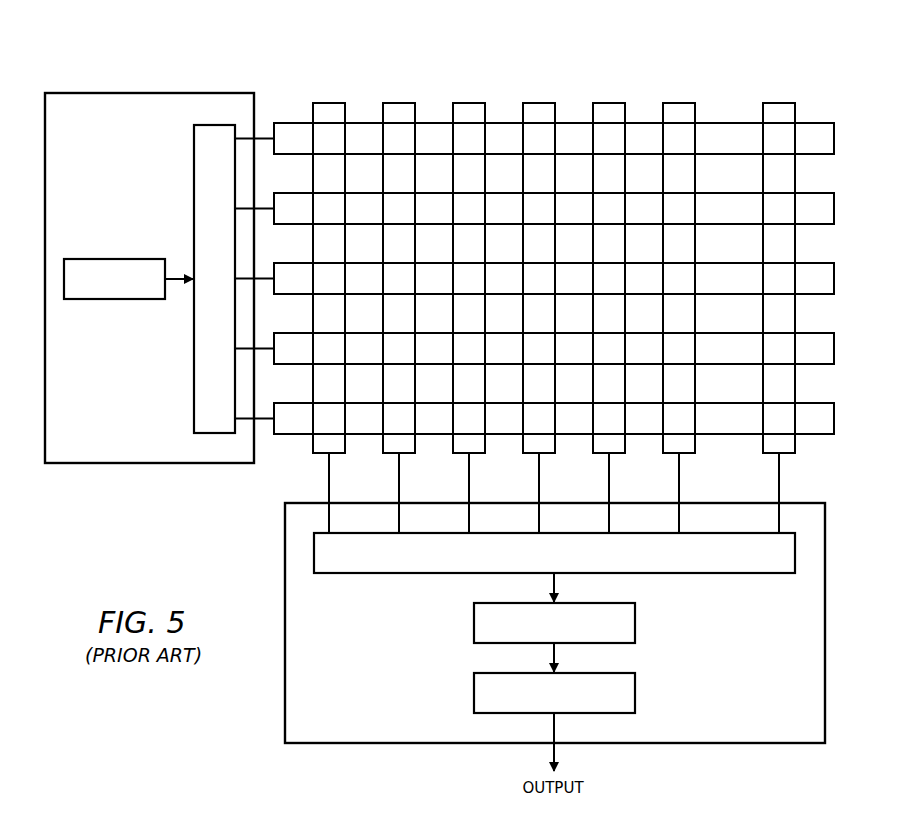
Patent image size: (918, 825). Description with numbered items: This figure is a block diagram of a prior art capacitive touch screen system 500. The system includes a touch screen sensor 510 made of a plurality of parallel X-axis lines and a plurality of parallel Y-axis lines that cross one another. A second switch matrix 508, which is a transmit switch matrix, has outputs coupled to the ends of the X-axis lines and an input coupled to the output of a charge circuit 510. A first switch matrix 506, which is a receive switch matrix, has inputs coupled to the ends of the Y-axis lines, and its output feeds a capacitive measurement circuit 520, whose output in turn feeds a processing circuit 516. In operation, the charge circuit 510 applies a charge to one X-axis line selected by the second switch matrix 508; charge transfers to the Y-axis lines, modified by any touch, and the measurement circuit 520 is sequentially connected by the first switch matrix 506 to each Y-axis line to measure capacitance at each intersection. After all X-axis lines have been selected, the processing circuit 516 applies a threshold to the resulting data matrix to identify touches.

The capacitive touch screen system 500 is at (162, 58).
The first switch matrix 506 is at (703, 573).
The second switch matrix 508 is at (194, 364).
The touch screen sensor 510 is at (113, 258).
The processing circuit 516 is at (472, 694).
The capacitive measurement circuit 520 is at (472, 624).